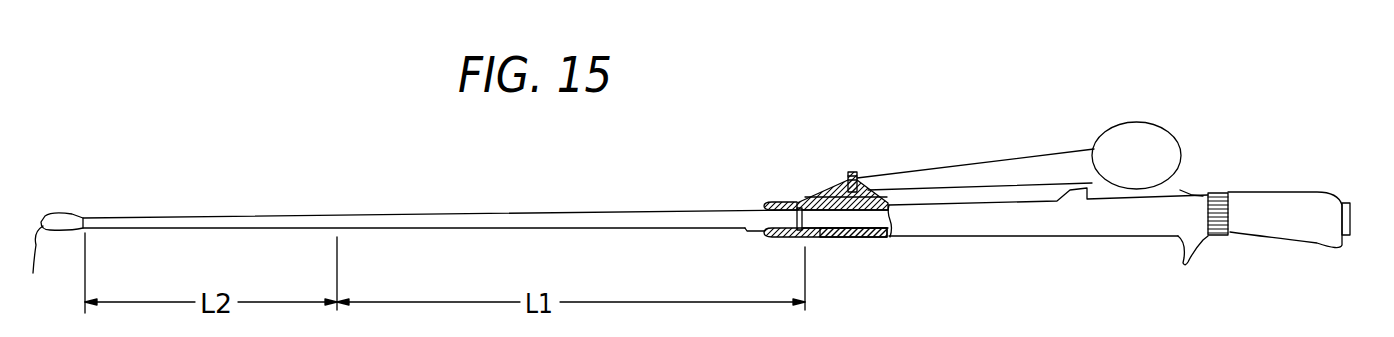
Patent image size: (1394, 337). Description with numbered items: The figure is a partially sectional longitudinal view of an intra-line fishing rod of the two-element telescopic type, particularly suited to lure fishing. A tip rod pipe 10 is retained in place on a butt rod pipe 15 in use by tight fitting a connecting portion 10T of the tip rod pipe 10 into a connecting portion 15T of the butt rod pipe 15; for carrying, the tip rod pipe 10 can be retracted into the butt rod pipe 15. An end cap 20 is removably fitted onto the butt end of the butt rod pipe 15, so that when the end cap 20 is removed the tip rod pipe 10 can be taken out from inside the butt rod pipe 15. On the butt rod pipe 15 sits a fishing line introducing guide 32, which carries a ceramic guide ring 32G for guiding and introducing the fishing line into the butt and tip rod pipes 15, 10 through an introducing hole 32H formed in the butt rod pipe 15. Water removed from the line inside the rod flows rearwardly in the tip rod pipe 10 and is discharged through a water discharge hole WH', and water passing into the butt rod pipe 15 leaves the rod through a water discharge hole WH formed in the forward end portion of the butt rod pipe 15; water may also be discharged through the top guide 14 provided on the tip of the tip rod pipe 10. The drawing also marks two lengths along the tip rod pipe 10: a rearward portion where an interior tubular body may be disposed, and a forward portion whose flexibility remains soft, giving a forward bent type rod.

The tip rod pipe 10 is at (546, 212).
The top guide 14 is at (62, 222).
The connecting portion of the tip rod pipe 10T is at (778, 207).
The water discharge hole WH' is at (727, 255).
The connecting portion of the butt rod pipe 15T is at (790, 238).
The water discharge hole WH is at (853, 260).
The introducing hole 32H is at (813, 196).
The fishing line introducing guide 32 is at (852, 168).
The ceramic guide ring 32G is at (865, 176).
The butt rod pipe 15 is at (985, 226).
The end cap 20 is at (1355, 205).